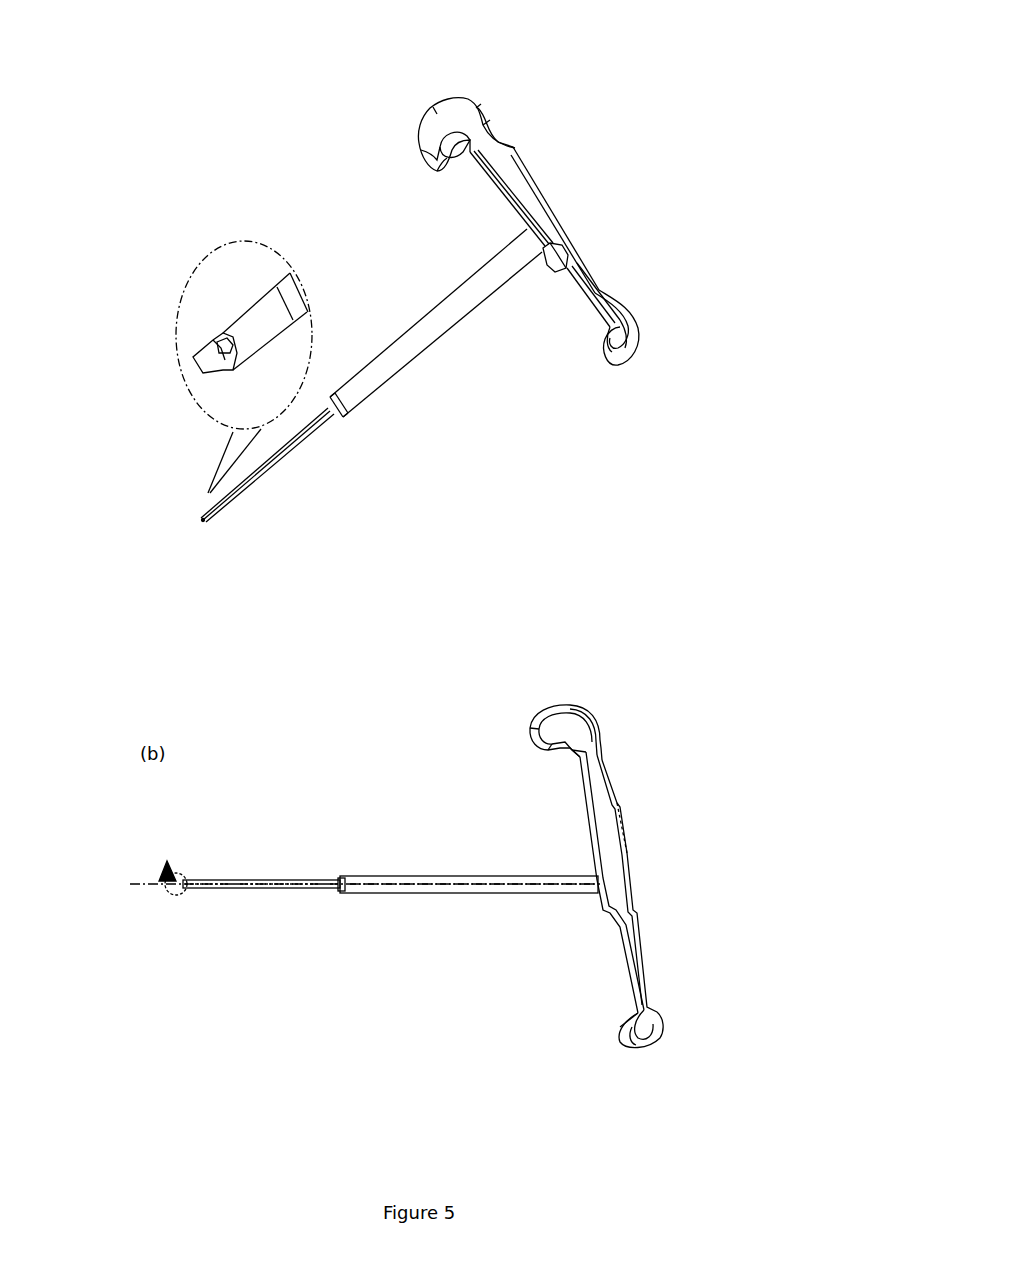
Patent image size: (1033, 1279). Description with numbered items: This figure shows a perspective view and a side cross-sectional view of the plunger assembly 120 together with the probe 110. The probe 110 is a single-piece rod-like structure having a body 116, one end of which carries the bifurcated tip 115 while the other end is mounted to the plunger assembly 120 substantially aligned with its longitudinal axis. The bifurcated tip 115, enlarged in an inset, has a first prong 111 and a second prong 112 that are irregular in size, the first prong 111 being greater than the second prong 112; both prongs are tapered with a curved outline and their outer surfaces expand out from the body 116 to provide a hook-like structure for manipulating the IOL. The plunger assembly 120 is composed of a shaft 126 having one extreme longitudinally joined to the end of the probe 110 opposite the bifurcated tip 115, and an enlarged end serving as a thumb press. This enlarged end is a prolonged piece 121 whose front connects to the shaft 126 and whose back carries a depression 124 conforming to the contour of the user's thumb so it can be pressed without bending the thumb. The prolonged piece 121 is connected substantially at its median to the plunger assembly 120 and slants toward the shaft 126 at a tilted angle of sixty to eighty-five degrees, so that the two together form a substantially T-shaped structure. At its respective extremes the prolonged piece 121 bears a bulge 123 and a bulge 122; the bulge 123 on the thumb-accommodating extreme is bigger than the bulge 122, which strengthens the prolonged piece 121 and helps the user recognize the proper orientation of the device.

The probe 110 is at (300, 511).
The first prong 111 is at (212, 350).
The second prong 112 is at (233, 365).
The bifurcated tip 115 is at (205, 521).
The body 116 is at (288, 450).
The plunger assembly 120 is at (568, 72).
The prolonged piece 121 is at (540, 195).
The bulge 122 is at (618, 327).
The bulge 123 is at (447, 110).
The depression 124 is at (488, 122).
The shaft 126 is at (418, 342).